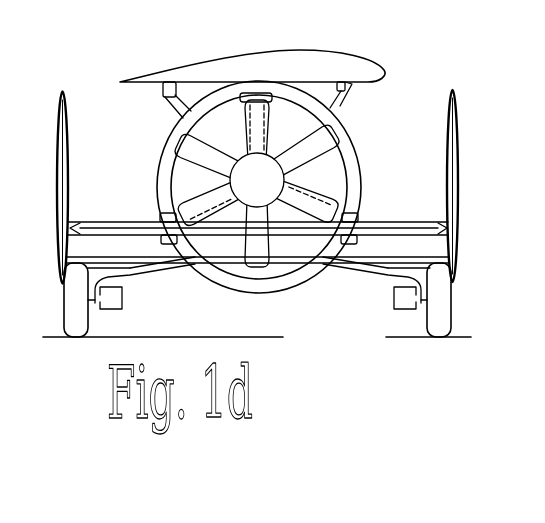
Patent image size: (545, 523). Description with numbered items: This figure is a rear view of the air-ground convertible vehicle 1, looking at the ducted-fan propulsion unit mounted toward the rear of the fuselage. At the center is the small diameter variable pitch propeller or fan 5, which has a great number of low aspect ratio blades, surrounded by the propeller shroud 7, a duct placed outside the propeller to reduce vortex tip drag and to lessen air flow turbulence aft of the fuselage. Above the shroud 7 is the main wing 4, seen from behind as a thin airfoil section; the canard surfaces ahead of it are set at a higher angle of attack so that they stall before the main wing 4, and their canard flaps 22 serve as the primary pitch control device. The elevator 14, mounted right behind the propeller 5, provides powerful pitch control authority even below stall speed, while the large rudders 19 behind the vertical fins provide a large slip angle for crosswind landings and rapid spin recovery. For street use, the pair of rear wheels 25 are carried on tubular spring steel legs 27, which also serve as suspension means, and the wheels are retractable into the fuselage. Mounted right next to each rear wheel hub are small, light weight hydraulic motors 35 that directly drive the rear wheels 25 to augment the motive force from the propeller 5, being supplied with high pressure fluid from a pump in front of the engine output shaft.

The air-ground convertible vehicle 1 is at (286, 318).
The main wing 4 is at (338, 70).
The propeller 5 is at (312, 152).
The propeller shroud 7 is at (348, 165).
The elevator 14 is at (368, 228).
The rudders 19 is at (453, 208).
The canard flaps 22 is at (375, 260).
The rear wheels 25 is at (443, 315).
The tubular spring steel legs 27 is at (390, 272).
The hydraulic motors 35 is at (113, 307).